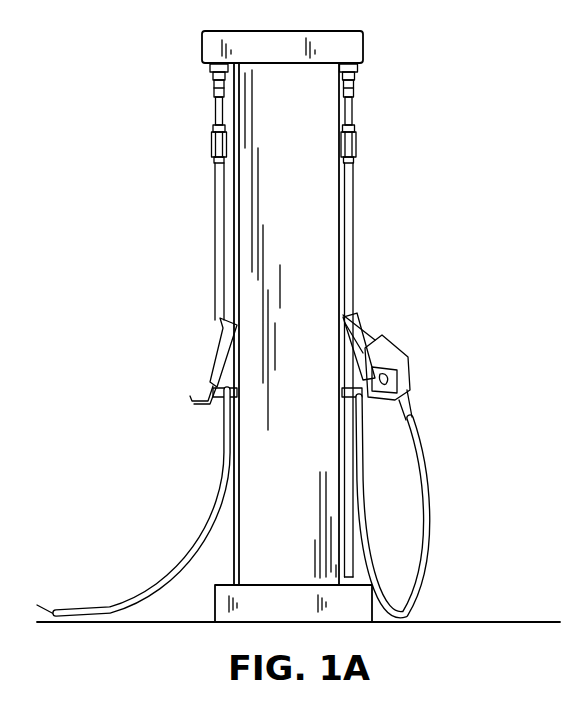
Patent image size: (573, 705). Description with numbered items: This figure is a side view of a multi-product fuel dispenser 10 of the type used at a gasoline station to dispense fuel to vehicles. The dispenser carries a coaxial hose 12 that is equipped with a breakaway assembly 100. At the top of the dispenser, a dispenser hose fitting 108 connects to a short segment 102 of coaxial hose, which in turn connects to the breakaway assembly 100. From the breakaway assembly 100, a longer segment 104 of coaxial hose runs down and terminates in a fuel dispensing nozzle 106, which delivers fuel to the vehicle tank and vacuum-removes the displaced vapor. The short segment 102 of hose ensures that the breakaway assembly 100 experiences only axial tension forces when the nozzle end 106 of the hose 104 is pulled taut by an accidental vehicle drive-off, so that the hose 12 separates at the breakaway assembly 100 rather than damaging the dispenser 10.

The multi-product fuel dispenser 10 is at (176, 229).
The coaxial hose 12 is at (338, 183).
The breakaway assembly 100 is at (358, 147).
The short segment of coaxial hose 102 is at (355, 110).
The longer segment of coaxial hose 104 is at (355, 227).
The fuel dispensing nozzle 106 is at (385, 340).
The dispenser hose fitting 108 is at (358, 72).